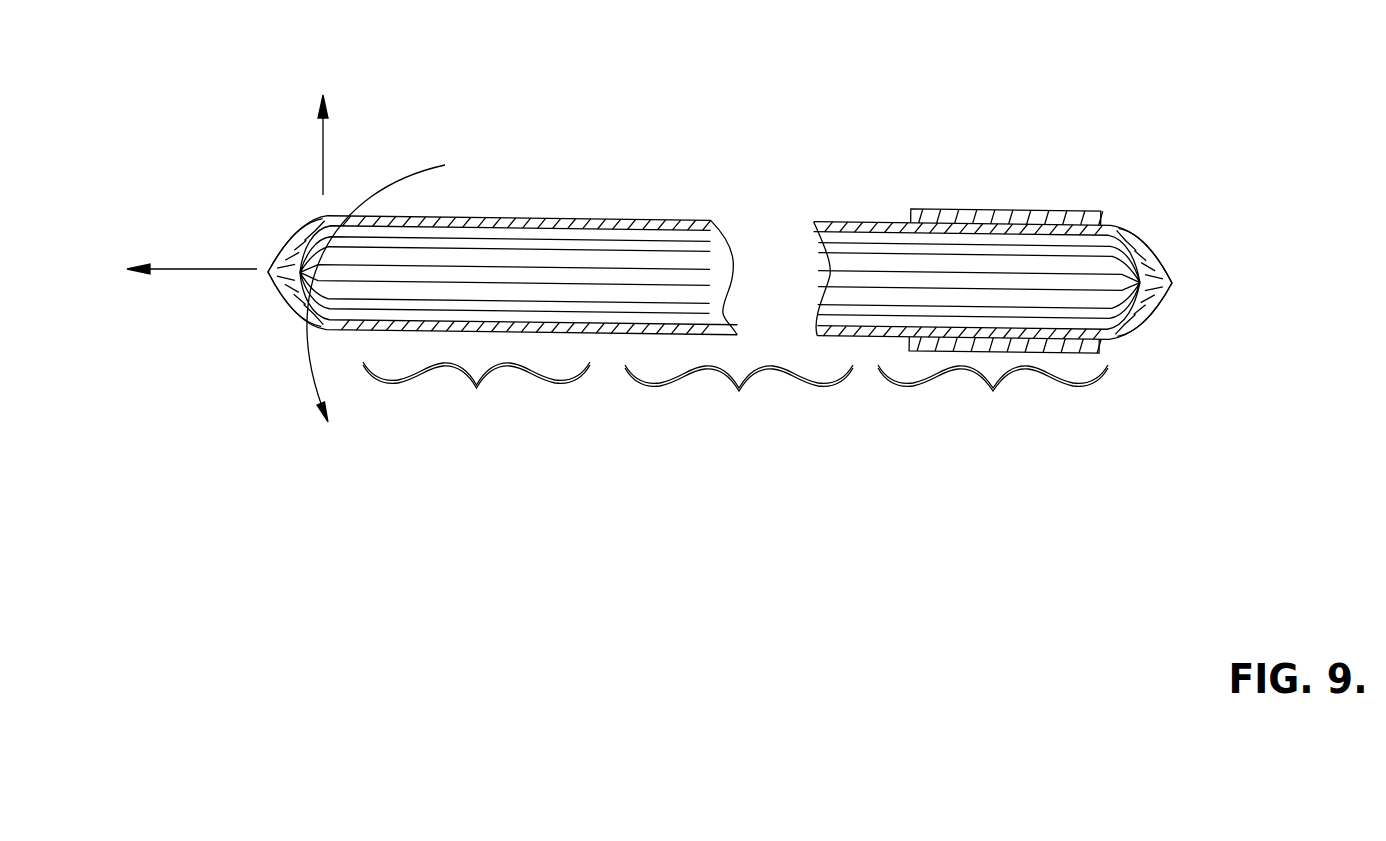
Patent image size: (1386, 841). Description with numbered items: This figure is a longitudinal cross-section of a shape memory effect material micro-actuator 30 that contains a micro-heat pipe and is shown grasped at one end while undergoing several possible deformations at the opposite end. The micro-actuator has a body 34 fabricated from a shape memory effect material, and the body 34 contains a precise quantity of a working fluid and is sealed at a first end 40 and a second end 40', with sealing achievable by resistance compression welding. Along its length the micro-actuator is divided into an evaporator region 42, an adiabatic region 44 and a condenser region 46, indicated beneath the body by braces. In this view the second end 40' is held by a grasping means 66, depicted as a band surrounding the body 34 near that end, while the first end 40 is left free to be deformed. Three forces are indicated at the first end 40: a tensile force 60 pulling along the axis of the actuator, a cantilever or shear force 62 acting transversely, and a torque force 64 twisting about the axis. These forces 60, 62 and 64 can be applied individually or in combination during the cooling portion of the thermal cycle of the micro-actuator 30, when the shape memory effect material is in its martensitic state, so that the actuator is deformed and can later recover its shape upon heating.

The shape memory effect material micro-actuator 30 is at (853, 210).
The body 34 is at (633, 220).
The first end 40 is at (229, 311).
The second end 40' is at (1193, 242).
The evaporator region 42 is at (476, 402).
The adiabatic region 44 is at (739, 404).
The condenser region 46 is at (993, 404).
The tensile force 60 is at (164, 266).
The cantilever/shear force 62 is at (328, 122).
The torque force 64 is at (376, 315).
The grasping means 66 is at (1015, 202).